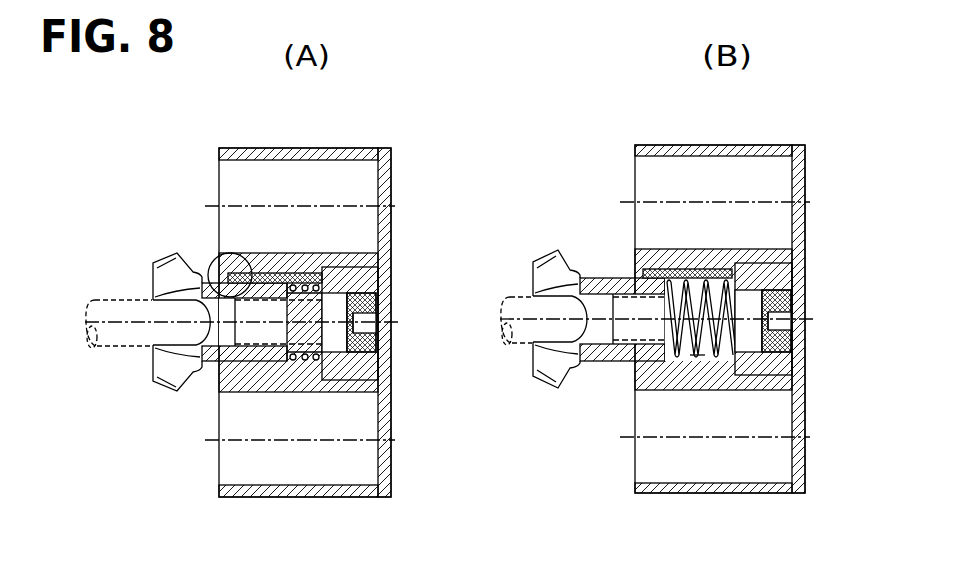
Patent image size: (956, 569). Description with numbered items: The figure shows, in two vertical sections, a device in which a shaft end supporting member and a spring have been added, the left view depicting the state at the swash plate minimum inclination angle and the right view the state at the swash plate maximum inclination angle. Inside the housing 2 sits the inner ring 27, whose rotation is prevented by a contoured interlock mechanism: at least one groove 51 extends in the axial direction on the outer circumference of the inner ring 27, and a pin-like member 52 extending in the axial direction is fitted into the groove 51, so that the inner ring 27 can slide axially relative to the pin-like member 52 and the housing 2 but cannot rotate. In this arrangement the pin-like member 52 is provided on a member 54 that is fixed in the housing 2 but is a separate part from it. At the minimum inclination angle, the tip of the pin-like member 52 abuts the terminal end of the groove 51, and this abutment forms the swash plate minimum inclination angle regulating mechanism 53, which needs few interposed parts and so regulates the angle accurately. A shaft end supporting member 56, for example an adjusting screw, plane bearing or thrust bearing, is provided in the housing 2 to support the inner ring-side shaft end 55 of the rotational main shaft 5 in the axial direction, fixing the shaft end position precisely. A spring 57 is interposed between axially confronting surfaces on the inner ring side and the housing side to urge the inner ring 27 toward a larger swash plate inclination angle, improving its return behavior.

The housing 2 is at (312, 197).
The rotational main shaft 5 is at (123, 323).
The inner ring 27 is at (183, 283).
The groove 51 is at (250, 285).
The pin-like member 52 is at (272, 282).
The swash plate minimum inclination angle regulating mechanism 53 is at (221, 256).
The member 54 is at (357, 282).
The inner ring-side shaft end 55 is at (333, 340).
The shaft end supporting member 56 is at (362, 295).
The spring 57 is at (292, 292).